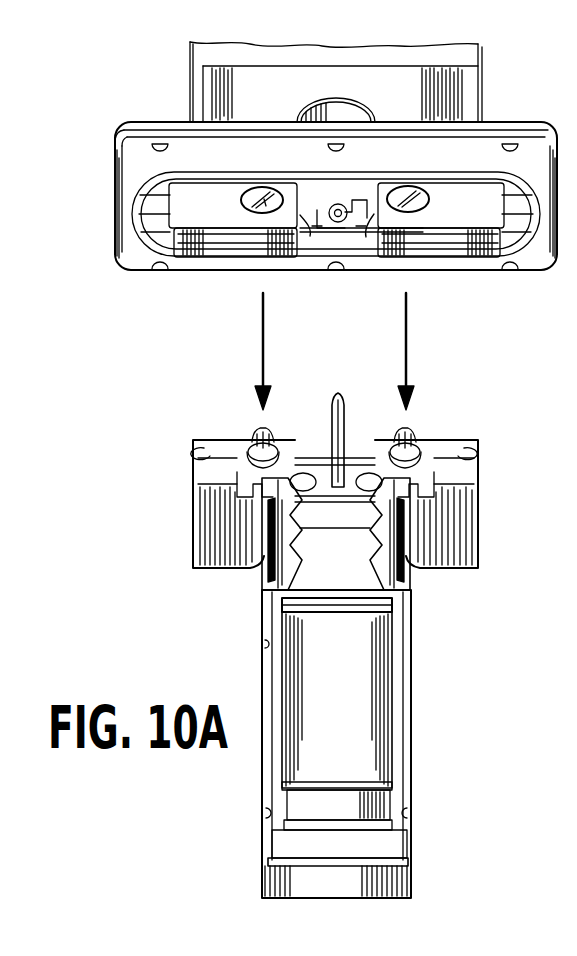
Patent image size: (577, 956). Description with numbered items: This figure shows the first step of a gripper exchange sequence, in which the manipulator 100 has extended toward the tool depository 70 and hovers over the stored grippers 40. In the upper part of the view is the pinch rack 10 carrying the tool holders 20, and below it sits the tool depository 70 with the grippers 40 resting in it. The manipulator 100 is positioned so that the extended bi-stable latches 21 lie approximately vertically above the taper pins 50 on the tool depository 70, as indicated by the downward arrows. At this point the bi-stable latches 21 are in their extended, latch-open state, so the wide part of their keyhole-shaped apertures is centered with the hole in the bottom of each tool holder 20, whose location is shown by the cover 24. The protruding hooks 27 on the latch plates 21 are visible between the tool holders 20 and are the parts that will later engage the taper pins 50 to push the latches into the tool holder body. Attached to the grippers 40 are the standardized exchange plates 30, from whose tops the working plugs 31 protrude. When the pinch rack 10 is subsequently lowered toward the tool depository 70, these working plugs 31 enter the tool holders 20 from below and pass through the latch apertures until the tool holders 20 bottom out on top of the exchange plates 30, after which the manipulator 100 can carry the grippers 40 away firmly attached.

The pinch rack 10 is at (523, 153).
The manipulator 100 is at (208, 60).
The tool holder 20 is at (216, 250).
The bi-stable latch 21 is at (310, 250).
The cover 24 is at (262, 196).
The protruding hook 27 is at (340, 208).
The standardized exchange plate 30 is at (202, 480).
The working plug 31 is at (255, 432).
The gripper 40 is at (262, 596).
The taper pin 50 is at (333, 408).
The tool depository 70 is at (426, 572).